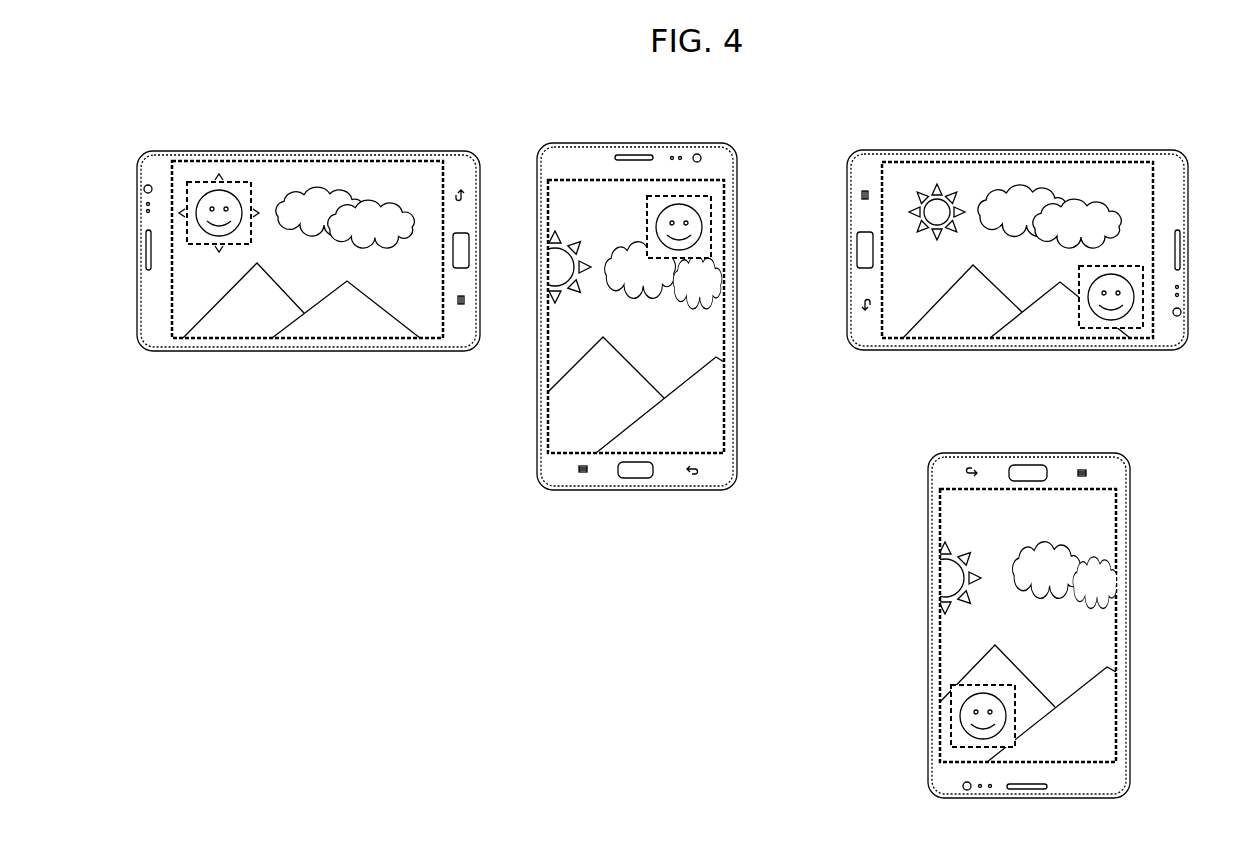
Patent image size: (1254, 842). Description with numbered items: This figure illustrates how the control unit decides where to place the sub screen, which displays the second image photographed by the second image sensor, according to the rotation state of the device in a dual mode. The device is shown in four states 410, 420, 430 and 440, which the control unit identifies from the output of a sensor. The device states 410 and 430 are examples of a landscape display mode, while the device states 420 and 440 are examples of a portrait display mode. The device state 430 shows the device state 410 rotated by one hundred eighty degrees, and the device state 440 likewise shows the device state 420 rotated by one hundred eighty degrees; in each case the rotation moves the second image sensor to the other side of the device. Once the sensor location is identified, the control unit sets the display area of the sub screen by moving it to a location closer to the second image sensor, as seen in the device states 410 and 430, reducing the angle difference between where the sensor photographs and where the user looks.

The device state 410 is at (284, 223).
The device state 420 is at (655, 292).
The device state 430 is at (1044, 246).
The device state 440 is at (1027, 603).